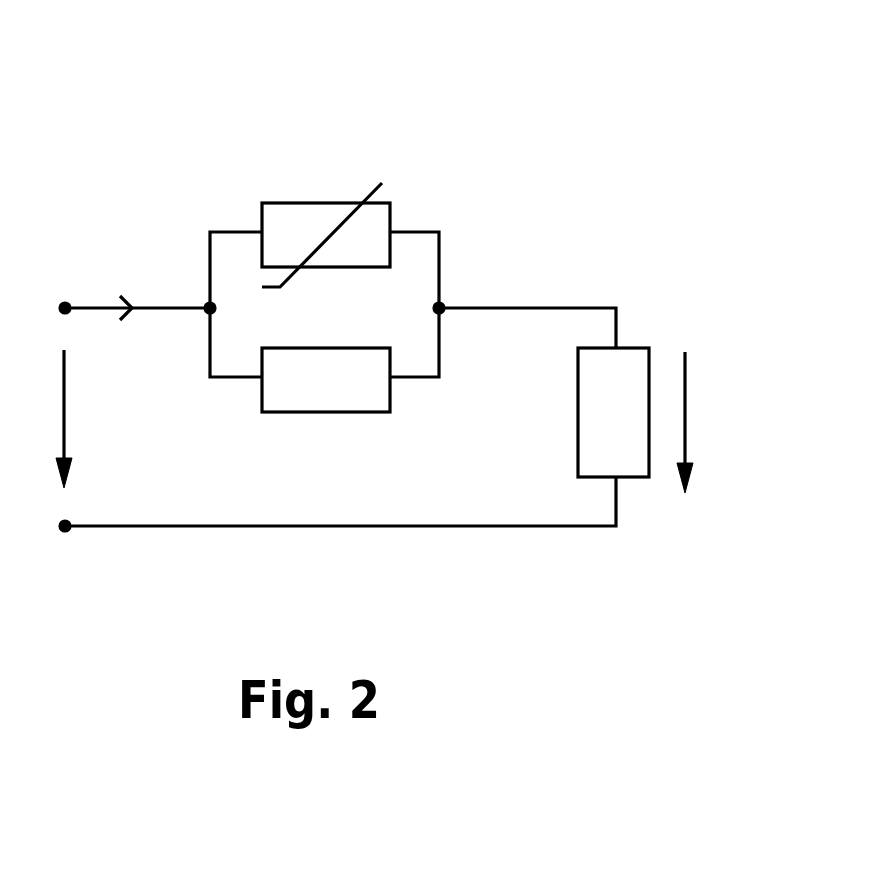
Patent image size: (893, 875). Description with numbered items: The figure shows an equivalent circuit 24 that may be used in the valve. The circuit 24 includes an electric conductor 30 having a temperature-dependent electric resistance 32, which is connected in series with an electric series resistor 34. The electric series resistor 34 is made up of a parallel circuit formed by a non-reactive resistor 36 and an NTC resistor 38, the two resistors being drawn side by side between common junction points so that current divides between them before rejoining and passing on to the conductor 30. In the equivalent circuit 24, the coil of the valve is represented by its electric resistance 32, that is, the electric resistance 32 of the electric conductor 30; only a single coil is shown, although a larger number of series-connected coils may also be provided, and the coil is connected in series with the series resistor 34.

The equivalent circuit 24 is at (545, 578).
The electric conductor 30 is at (625, 448).
The temperature-dependent electric resistance 32 is at (625, 400).
The electric series resistor 34 is at (434, 181).
The non-reactive resistor 36 is at (315, 375).
The NTC resistor 38 is at (288, 223).